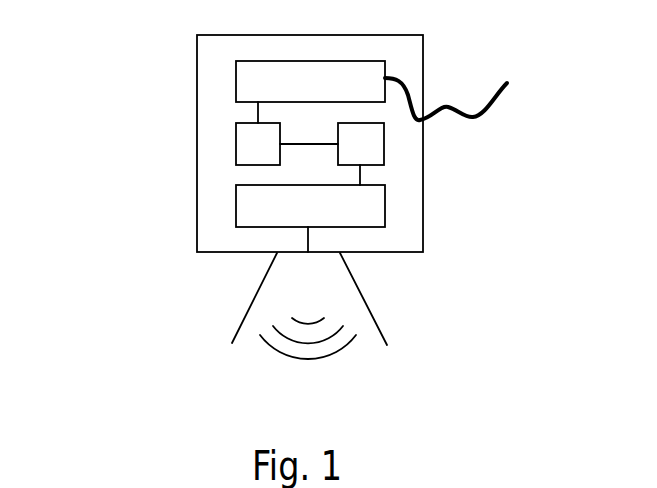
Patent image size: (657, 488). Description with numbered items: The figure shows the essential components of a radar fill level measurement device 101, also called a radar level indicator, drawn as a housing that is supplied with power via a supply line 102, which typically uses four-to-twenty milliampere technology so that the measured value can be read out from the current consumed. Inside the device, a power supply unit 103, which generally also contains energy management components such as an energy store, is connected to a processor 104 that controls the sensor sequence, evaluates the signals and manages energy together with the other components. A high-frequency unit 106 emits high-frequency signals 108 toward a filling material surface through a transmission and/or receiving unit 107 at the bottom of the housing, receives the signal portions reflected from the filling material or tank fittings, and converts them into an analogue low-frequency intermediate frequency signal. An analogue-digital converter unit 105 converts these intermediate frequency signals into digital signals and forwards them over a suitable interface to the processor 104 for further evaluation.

The radar fill level measurement device 101 is at (197, 46).
The supply line 102 is at (497, 108).
The power supply unit 103 is at (385, 67).
The processor 104 is at (237, 132).
The analogue-digital converter unit 105 is at (385, 153).
The high-frequency unit 106 is at (237, 208).
The transmission and/or receiving unit 107 is at (256, 296).
The high-frequency signals 108 is at (287, 363).